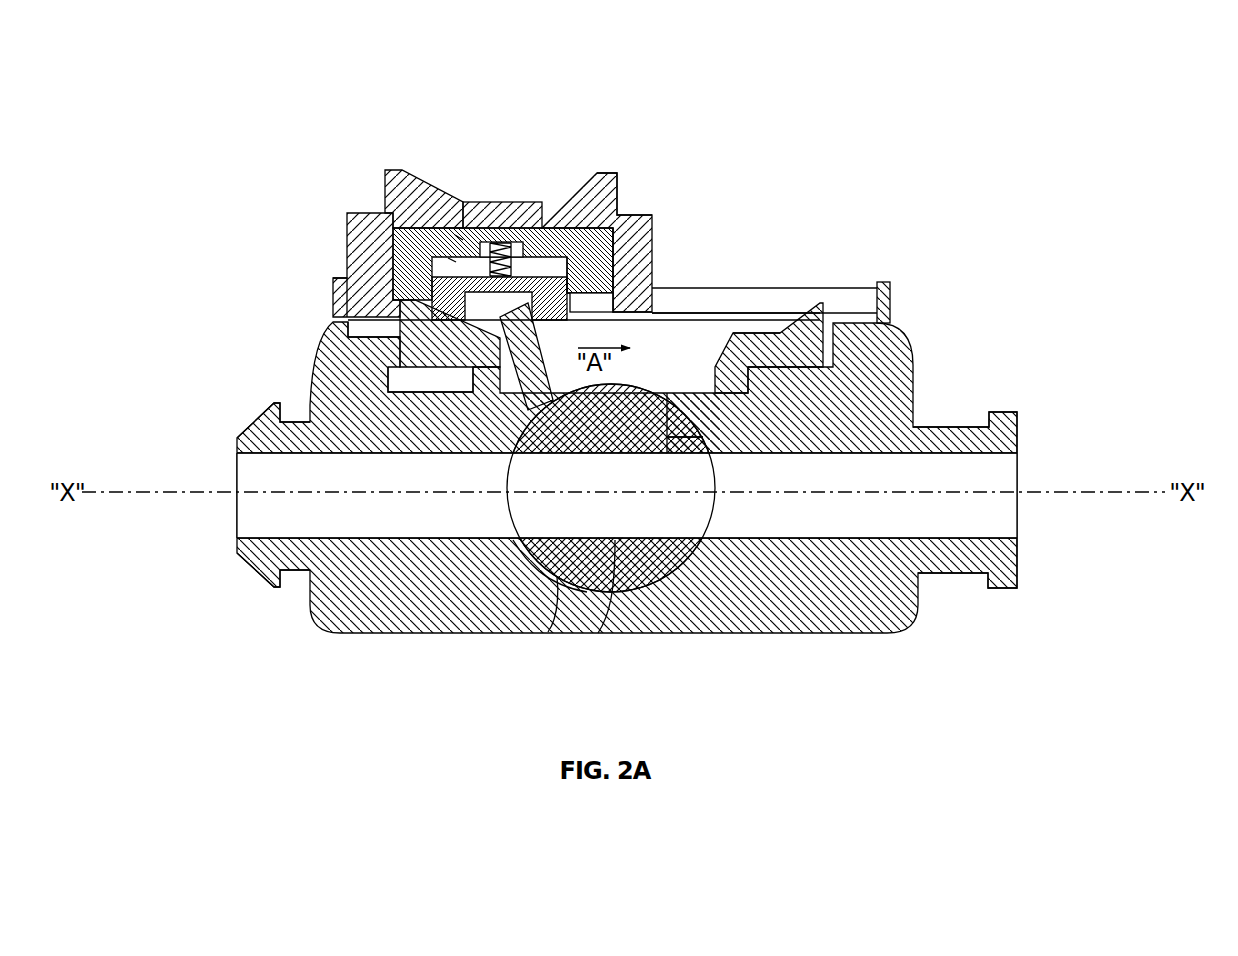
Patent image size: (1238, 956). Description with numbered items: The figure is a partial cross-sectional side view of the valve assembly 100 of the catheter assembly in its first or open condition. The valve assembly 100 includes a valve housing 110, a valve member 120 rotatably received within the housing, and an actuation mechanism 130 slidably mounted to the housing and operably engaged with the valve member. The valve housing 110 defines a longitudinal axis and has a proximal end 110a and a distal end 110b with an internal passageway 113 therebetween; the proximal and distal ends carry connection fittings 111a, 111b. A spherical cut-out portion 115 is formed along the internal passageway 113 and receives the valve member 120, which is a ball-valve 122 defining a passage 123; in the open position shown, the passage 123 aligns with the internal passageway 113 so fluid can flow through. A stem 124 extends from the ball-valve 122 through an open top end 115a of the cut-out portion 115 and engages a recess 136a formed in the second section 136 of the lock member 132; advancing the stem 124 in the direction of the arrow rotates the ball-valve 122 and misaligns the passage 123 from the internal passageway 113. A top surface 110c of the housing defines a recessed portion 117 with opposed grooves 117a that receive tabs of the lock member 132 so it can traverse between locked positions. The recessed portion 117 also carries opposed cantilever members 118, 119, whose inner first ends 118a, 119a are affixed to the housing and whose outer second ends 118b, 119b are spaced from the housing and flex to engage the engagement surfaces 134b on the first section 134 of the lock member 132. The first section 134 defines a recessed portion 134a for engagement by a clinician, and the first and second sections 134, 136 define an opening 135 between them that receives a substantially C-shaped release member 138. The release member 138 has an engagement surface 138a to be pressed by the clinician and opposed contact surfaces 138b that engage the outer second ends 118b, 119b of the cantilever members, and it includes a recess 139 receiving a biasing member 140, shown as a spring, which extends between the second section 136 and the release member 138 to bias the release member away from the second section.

The valve assembly 100 is at (957, 165).
The valve housing 110 is at (360, 633).
The proximal end 110a is at (250, 418).
The distal end 110b is at (1022, 437).
The top surface 110c is at (764, 283).
The connection fitting 111a is at (252, 571).
The connection fitting 111b is at (1013, 412).
The internal passageway 113 is at (275, 512).
The spherical cut-out portion 115 is at (548, 632).
The open top end 115a is at (697, 348).
The recessed portion 117 is at (676, 392).
The grooves 117a is at (776, 312).
The cantilever member 118 is at (405, 372).
The inner first end 118a is at (497, 347).
The outer second end 118b is at (410, 330).
The cantilever member 119 is at (790, 358).
The inner first end 119a is at (735, 362).
The outer second end 119b is at (845, 312).
The valve member 120 is at (652, 604).
The ball-valve 122 is at (667, 437).
The passage 123 is at (598, 633).
The stem 124 is at (528, 395).
The actuation mechanism 130 is at (499, 223).
The lock member 132 is at (397, 166).
The first section 134 is at (380, 236).
The recessed portion 134a is at (595, 205).
The engagement surfaces 134b is at (338, 280).
The opening 135 is at (620, 175).
The second section 136 is at (443, 300).
The recess 136a is at (523, 268).
The release member 138 is at (445, 272).
The engagement surface 138a is at (530, 243).
The contact surfaces 138b is at (415, 283).
The recess 139 is at (458, 238).
The biasing member 140 is at (452, 258).